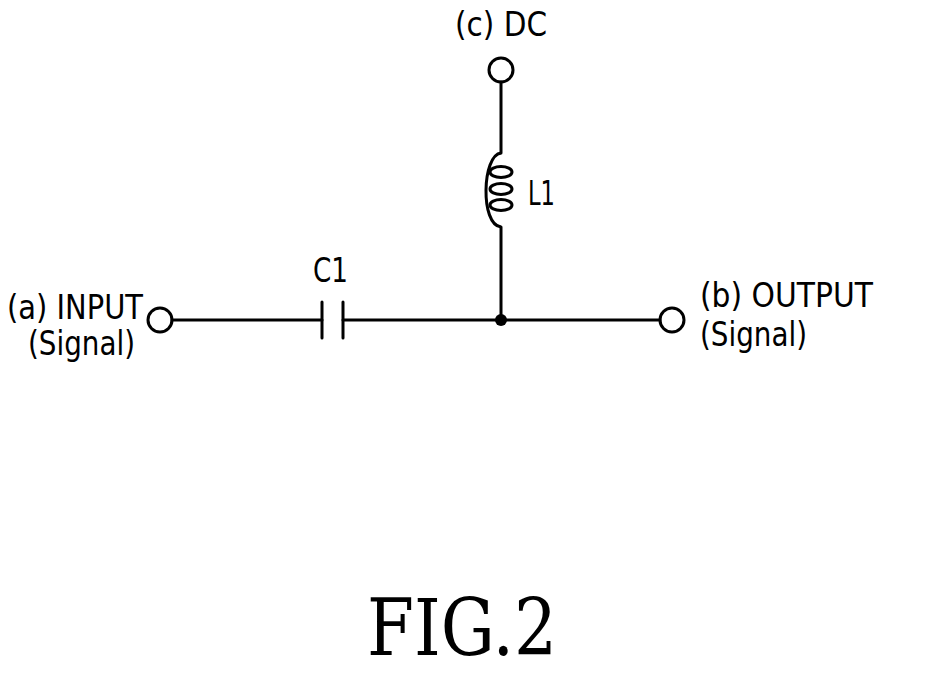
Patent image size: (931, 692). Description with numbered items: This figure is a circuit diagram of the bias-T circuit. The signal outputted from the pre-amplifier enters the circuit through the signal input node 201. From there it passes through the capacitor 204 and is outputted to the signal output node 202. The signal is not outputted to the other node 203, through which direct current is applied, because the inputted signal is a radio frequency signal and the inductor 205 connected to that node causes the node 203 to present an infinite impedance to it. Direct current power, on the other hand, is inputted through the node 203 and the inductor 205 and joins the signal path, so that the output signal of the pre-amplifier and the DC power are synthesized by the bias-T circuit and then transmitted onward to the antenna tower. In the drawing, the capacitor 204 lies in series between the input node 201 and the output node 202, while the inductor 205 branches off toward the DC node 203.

The signal input node 201 is at (158, 310).
The signal output node 202 is at (675, 332).
The node through which direct current is applied 203 is at (514, 67).
The capacitor C1 204 is at (345, 332).
The inductor L1 205 is at (511, 173).